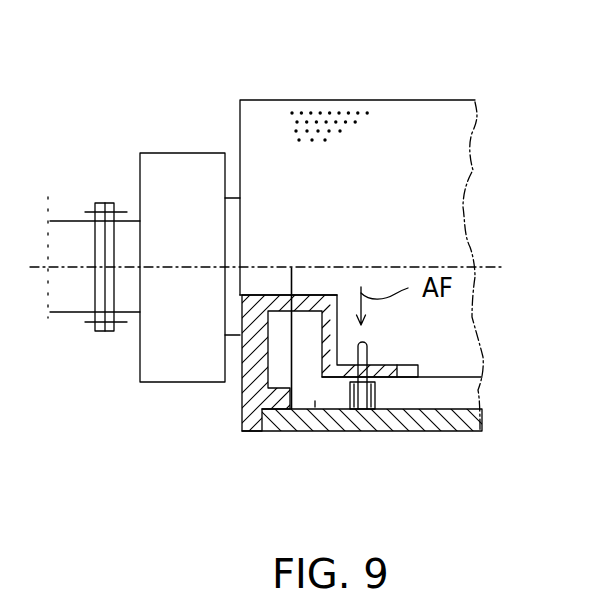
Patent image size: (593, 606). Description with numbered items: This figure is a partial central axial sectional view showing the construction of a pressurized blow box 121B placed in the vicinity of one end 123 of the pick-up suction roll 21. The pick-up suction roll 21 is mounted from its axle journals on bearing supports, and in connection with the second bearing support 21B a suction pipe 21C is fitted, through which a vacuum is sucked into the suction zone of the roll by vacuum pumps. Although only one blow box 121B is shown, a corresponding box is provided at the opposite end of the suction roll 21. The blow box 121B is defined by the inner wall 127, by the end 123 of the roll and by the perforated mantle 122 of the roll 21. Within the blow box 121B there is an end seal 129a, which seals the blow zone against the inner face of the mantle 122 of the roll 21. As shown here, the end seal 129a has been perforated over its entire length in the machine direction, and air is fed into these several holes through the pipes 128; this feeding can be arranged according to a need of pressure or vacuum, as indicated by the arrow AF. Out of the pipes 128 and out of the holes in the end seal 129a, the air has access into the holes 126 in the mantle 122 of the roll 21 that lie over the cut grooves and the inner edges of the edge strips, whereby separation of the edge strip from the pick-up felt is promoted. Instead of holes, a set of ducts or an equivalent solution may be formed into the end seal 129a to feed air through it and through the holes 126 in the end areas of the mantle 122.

The pick-up suction roll 21 is at (437, 115).
The second bearing support 21B is at (163, 167).
The suction pipe 21C is at (75, 295).
The pressurized blow box 121B is at (303, 431).
The mantle 122 is at (465, 433).
The end of the roll 123 is at (257, 389).
The holes in the mantle 126 is at (329, 110).
The inner wall 127 is at (312, 297).
The pipes 128 is at (363, 352).
The end seal 129a is at (375, 413).